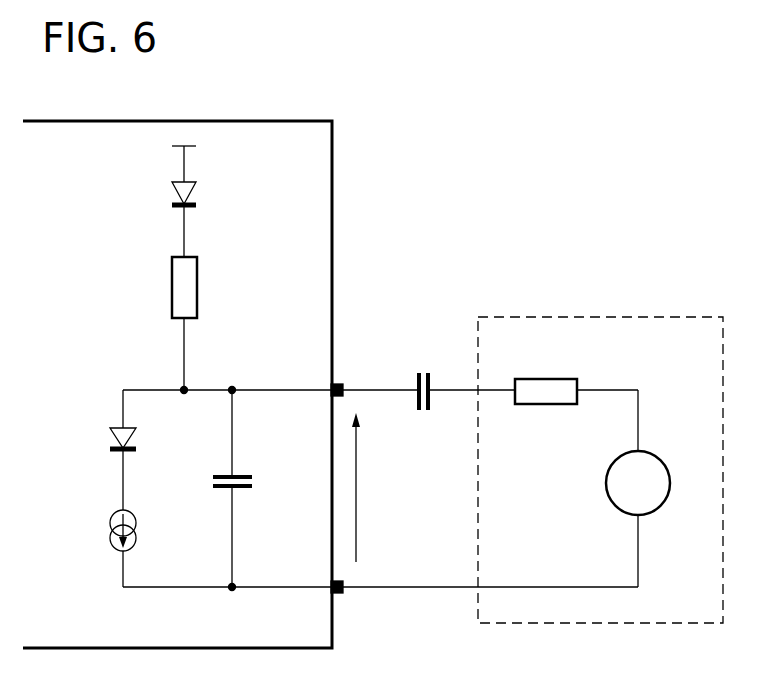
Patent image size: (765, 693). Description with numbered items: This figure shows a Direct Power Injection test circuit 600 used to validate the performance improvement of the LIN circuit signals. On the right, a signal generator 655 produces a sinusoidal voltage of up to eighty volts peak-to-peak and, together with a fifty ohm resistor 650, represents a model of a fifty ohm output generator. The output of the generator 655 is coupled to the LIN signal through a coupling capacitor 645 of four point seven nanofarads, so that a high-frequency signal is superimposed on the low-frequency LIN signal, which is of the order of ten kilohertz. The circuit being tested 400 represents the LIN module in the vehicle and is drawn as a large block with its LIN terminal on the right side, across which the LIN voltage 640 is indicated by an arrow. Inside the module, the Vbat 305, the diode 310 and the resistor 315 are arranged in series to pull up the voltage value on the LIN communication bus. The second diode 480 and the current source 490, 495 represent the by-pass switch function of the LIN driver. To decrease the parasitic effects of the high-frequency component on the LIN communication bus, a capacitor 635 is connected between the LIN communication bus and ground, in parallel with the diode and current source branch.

The Vbat 305 is at (172, 150).
The diode 310 is at (172, 191).
The resistor 315 is at (172, 280).
The circuit being tested 400 is at (334, 196).
The second diode 480 is at (110, 437).
The current source 490 is at (110, 526).
The current source 495 is at (94, 556).
The Direct Power Injection (DPI) test circuit 600 is at (559, 164).
The capacitor 635 is at (243, 472).
The LIN voltage 640 is at (357, 508).
The 4.7 nF capacitor 645 is at (428, 412).
The 50 ohm resistor 650 is at (548, 378).
The signal generator 655 is at (659, 459).